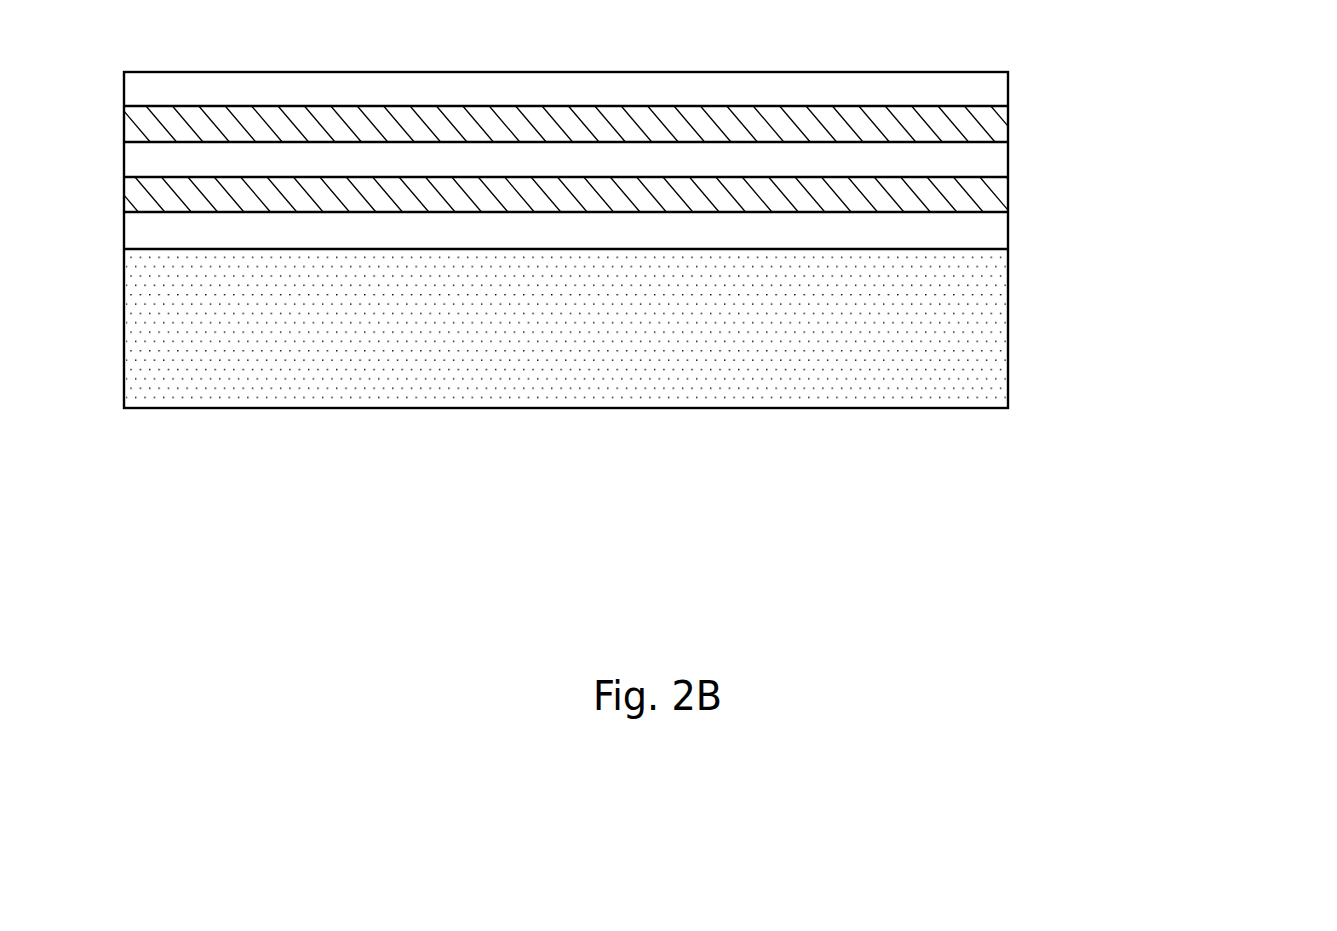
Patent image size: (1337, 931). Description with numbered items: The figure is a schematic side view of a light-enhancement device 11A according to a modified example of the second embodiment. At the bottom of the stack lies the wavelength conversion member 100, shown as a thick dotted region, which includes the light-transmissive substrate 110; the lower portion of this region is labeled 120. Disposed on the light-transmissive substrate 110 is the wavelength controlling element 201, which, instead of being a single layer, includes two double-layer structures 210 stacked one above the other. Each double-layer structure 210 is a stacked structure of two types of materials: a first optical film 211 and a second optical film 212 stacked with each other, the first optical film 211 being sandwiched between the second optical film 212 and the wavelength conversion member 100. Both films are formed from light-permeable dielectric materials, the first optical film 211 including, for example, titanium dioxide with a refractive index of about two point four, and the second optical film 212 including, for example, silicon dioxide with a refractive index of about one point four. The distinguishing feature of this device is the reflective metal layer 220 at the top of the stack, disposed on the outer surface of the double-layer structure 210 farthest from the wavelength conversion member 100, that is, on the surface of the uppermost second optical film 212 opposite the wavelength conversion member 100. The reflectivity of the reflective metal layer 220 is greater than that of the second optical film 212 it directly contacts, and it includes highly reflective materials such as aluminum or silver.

The light-enhancement device 11A is at (727, 234).
The reflective metal layer 220 is at (992, 88).
The wavelength controlling element 201 is at (685, 183).
The double-layer structure 210 is at (653, 183).
The second optical film 212 is at (992, 122).
The first optical film 211 is at (992, 160).
The wavelength conversion member 100 is at (687, 328).
The light-transmissive substrate 110 is at (1008, 287).
The second substrate portion 120 is at (990, 317).